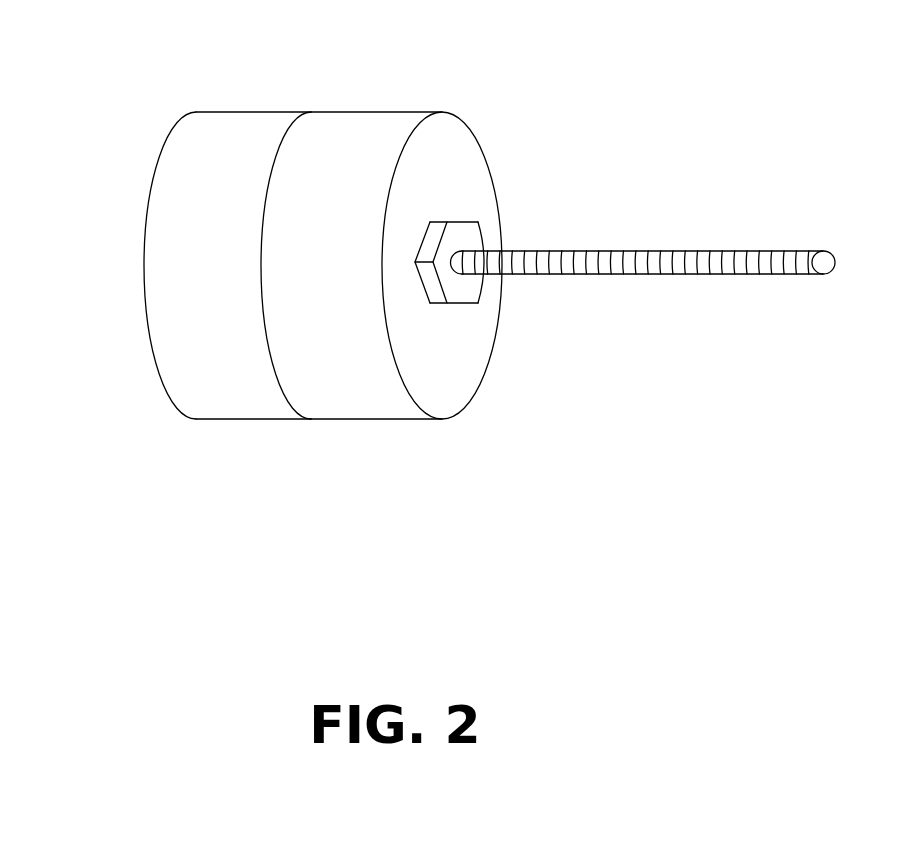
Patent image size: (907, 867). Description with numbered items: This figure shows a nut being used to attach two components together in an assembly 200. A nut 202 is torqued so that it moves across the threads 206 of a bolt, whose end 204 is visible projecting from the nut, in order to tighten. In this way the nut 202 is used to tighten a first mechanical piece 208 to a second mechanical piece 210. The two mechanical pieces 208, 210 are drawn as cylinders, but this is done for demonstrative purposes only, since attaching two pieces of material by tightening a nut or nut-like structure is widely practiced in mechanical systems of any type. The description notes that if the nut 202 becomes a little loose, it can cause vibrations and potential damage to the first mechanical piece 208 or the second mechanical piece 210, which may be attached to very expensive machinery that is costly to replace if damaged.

The magnet assembly 200 is at (508, 87).
The nut 202 is at (480, 221).
The rod end 204 is at (836, 247).
The threaded rod 206 is at (641, 250).
The first mechanical piece 208 is at (380, 110).
The second mechanical piece 210 is at (241, 110).